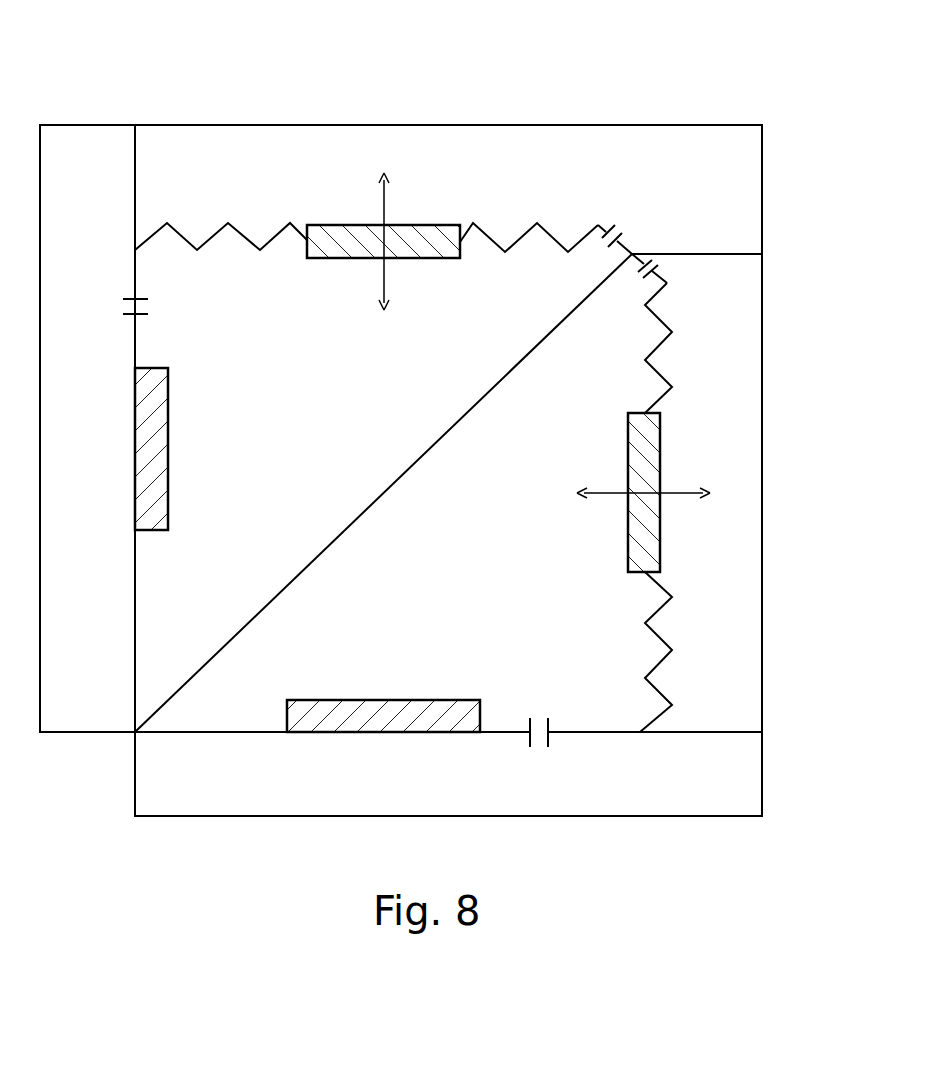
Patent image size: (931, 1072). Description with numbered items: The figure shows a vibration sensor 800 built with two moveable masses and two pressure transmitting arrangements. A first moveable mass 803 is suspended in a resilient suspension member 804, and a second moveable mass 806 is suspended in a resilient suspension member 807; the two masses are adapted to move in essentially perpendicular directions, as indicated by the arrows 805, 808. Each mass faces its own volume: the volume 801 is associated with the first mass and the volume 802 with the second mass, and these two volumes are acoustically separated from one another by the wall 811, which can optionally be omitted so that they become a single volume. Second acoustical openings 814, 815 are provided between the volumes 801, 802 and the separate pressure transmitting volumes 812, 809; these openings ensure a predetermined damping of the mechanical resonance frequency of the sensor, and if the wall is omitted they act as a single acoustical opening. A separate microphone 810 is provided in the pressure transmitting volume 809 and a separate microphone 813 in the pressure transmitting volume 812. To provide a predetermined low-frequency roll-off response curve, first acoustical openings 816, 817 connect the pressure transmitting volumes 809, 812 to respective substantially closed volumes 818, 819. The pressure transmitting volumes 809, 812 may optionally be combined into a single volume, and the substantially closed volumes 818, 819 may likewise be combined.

The vibration sensor 800 is at (657, 93).
The volume 801 is at (747, 172).
The volume 802 is at (747, 370).
The moveable mass 803 is at (423, 237).
The resilient suspension member 804 is at (577, 237).
The arrow 805 is at (380, 277).
The moveable mass 806 is at (632, 510).
The resilient suspension member 807 is at (648, 642).
The arrow 808 is at (600, 492).
The pressure transmitting volume 809 is at (197, 718).
The microphone 810 is at (397, 718).
The wall 811 is at (748, 255).
The pressure transmitting volume 812 is at (158, 615).
The microphone 813 is at (155, 442).
The second acoustical opening 814 is at (613, 228).
The second acoustical opening 815 is at (660, 267).
The first acoustical opening 816 is at (535, 747).
The first acoustical opening 817 is at (143, 307).
The substantially closed volume 818 is at (738, 772).
The substantially closed volume 819 is at (77, 138).